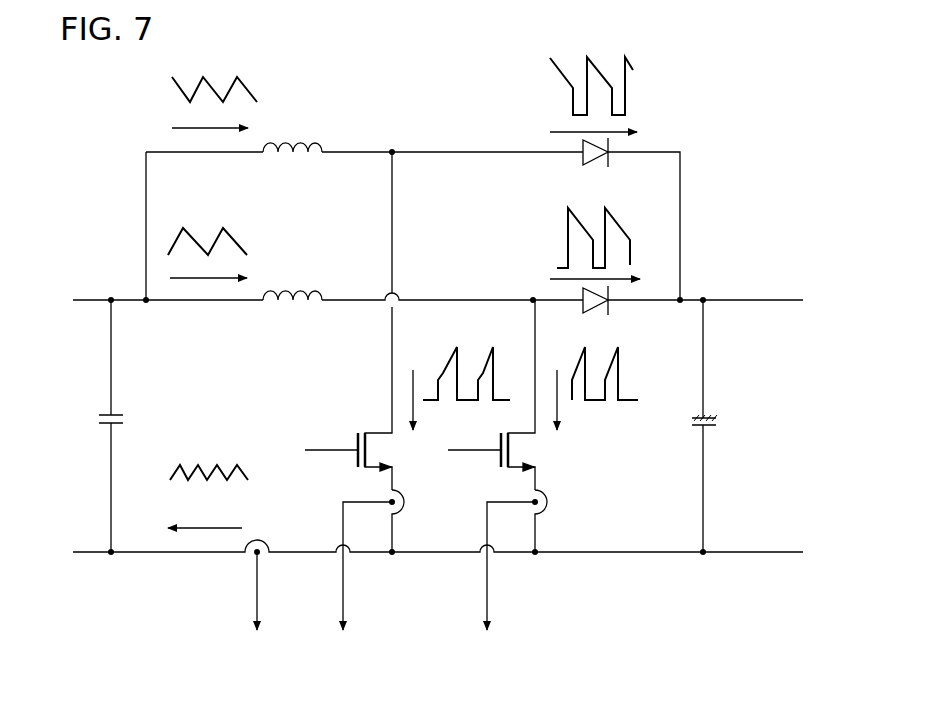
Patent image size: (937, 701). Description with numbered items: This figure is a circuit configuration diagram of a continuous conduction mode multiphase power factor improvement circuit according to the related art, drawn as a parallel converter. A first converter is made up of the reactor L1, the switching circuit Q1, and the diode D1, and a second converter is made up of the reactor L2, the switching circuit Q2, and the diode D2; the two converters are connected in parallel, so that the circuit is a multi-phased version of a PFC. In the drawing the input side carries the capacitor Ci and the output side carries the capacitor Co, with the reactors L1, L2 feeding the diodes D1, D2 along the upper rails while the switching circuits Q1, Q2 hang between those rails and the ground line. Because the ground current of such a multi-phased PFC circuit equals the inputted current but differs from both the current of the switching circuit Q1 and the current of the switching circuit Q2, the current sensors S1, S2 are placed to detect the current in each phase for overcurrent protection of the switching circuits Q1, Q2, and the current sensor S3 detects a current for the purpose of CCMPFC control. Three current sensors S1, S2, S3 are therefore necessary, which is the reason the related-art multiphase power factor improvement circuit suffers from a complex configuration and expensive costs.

The reactor L1 is at (234, 114).
The reactor L2 is at (245, 264).
The diode D1 is at (593, 122).
The diode D2 is at (599, 272).
The switching circuit Q1 is at (407, 321).
The switching circuit Q2 is at (543, 395).
The input capacitor Ci is at (173, 426).
The output capacitor Co is at (720, 426).
The current sensor S1 is at (398, 510).
The current sensor S2 is at (541, 510).
The current sensor S3 is at (262, 558).